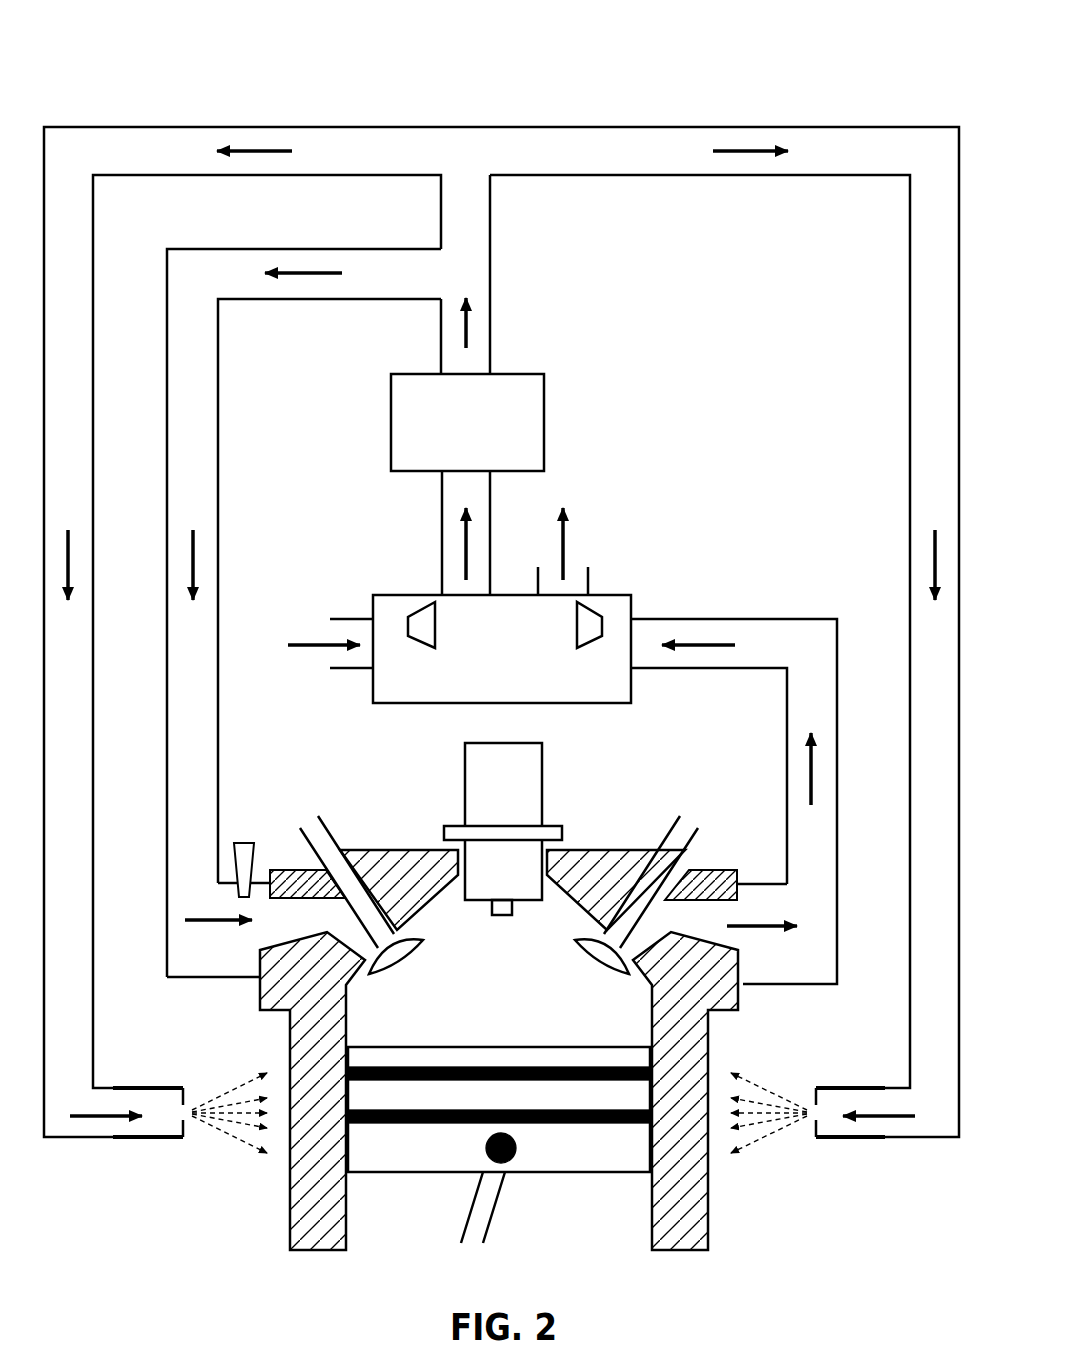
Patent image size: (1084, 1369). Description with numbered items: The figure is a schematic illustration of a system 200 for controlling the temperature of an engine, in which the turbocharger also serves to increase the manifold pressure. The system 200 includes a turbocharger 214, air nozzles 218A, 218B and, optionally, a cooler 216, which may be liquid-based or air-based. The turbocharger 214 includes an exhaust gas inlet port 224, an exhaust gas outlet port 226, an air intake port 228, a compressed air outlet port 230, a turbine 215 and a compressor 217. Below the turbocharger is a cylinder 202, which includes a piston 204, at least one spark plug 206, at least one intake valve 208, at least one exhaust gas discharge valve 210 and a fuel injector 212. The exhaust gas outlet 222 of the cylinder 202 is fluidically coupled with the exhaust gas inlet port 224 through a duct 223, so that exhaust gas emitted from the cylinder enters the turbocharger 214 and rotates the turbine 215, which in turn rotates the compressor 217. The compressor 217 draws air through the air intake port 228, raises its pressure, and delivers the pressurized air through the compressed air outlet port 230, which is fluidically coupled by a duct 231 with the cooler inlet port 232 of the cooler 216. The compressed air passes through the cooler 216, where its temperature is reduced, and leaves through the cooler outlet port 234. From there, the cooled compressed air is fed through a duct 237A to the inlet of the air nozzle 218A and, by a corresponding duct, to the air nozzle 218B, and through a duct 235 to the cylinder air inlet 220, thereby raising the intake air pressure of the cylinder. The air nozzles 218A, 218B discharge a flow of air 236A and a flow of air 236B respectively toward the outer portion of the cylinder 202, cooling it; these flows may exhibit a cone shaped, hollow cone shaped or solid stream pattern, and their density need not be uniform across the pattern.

The system 200 is at (565, 95).
The cylinder 202 is at (710, 1232).
The piston 204 is at (508, 1047).
The spark plug 206 is at (543, 790).
The intake valve 208 is at (411, 950).
The exhaust gas discharge valve 210 is at (575, 940).
The fuel injector 212 is at (250, 843).
The turbocharger 214 is at (565, 703).
The turbine 215 is at (573, 623).
The cooler 216 is at (545, 398).
The compressor 217 is at (437, 622).
The air nozzle 218A is at (168, 1139).
The air nozzle 218B is at (822, 1139).
The cylinder air inlet 220 is at (237, 977).
The exhaust gas outlet 222 is at (750, 884).
The duct 223 is at (787, 748).
The exhaust gas inlet port 224 is at (645, 619).
The exhaust gas outlet port 226 is at (589, 585).
The air intake port 228 is at (349, 619).
The compressed air outlet port 230 is at (442, 578).
The duct 231 is at (490, 535).
The cooler inlet port 232 is at (442, 483).
The cooler outlet port 234 is at (490, 356).
The duct 235 is at (290, 300).
The flow of air 236A is at (240, 1066).
The flow of air 236B is at (760, 1066).
The duct 237A is at (320, 177).